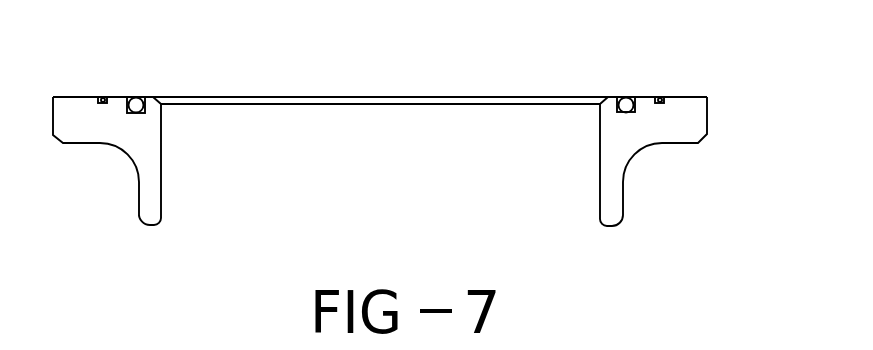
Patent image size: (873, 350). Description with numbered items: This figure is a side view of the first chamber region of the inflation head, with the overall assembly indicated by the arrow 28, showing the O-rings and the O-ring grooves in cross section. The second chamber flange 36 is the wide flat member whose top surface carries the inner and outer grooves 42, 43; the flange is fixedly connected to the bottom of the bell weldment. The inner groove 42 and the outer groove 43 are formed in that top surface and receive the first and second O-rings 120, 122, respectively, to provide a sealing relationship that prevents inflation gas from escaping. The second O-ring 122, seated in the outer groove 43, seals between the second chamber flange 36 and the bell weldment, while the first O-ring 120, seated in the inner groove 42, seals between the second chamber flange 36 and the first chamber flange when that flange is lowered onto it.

The retainer assembly 28 is at (710, 201).
The second chamber flange 36 is at (151, 216).
The inner groove 42 is at (130, 113).
The outer groove 43 is at (98, 144).
The first O-ring 120 is at (137, 100).
The second O-ring 122 is at (103, 99).